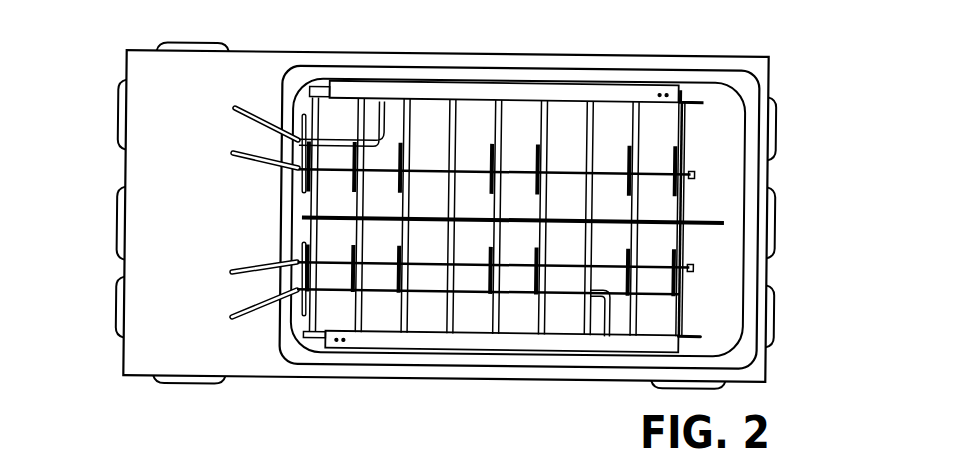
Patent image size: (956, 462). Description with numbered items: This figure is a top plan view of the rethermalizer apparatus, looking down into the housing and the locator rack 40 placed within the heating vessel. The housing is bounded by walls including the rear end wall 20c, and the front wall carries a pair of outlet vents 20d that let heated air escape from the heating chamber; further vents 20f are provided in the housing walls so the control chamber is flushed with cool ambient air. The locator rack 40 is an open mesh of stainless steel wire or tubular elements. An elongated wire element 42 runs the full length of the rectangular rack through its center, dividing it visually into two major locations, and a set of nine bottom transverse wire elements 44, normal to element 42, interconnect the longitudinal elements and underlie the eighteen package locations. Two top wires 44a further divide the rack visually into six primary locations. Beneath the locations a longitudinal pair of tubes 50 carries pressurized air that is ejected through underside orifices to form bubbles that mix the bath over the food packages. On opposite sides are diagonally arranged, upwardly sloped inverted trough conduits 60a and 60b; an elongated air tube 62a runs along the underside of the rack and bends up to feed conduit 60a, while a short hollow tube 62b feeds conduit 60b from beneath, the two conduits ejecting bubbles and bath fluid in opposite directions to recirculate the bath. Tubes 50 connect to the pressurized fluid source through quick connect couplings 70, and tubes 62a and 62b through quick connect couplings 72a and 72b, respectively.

The rear end wall 20c is at (118, 258).
The outlet vents 20d is at (773, 229).
The container side wall bumper 20f is at (117, 186).
The locator rack 40 is at (570, 215).
The elongated wire element 42 is at (720, 220).
The bottom transverse wire elements 44 is at (405, 236).
The top wires 44a is at (448, 157).
The tubes 50 is at (504, 264).
The inverted trough-type conduit 60a is at (505, 343).
The inverted trough-type conduit 60b is at (475, 95).
The air tube 62a is at (473, 293).
The hollow tube 62b is at (330, 138).
The quick connect couplings 70 is at (239, 219).
The quick connect coupling 72a is at (251, 322).
The quick connect coupling 72b is at (255, 106).